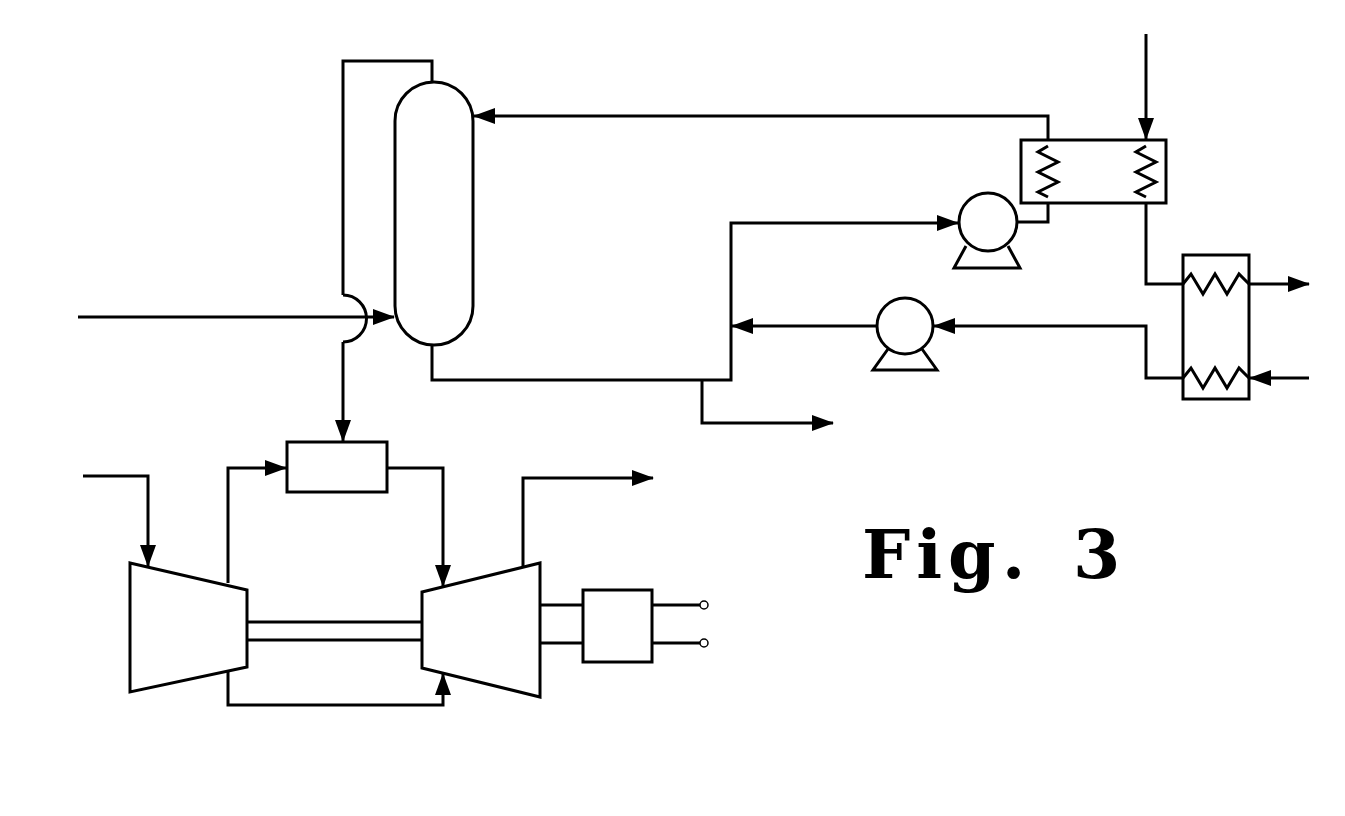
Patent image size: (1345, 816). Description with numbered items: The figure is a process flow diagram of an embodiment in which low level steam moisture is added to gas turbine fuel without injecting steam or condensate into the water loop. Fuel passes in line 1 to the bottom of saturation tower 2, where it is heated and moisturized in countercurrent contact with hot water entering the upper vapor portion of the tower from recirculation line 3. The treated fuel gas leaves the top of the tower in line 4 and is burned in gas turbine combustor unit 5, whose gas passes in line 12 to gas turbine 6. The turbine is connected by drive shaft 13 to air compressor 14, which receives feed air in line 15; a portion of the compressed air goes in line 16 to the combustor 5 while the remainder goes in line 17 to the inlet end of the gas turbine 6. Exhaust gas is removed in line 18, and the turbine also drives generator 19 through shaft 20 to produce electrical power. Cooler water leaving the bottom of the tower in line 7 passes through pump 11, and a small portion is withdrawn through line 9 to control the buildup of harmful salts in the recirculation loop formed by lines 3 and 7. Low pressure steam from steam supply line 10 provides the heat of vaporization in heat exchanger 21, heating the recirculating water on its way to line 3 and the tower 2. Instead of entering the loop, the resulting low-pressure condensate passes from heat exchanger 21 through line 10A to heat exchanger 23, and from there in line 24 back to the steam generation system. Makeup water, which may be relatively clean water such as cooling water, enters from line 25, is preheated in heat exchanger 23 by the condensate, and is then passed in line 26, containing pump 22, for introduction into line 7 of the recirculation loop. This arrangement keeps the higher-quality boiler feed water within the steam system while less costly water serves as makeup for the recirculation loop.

The fuel line 1 is at (232, 317).
The saturation tower 2 is at (473, 212).
The recirculation line 3 is at (682, 116).
The treated fuel gas line 4 is at (343, 182).
The gas turbine combustor unit 5 is at (350, 442).
The gas turbine 6 is at (490, 685).
The recirculation line 7 is at (490, 380).
The blowdown line 9 is at (740, 423).
The steam supply line 10 is at (1145, 97).
The condensate line 10A is at (1148, 220).
The pump 11 is at (1012, 240).
The combustion gas line 12 is at (435, 468).
The drive shaft 13 is at (368, 622).
The air compressor 14 is at (168, 682).
The feed air line 15 is at (120, 476).
The compressed air line 16 is at (229, 495).
The compressed air line 17 is at (356, 705).
The exhaust gas line 18 is at (548, 478).
The generator 19 is at (615, 590).
The shaft 20 is at (552, 605).
The heat exchanger 21 is at (1166, 172).
The pump 22 is at (928, 340).
The heat exchanger 23 is at (1222, 255).
The condensate return line 24 is at (1258, 284).
The makeup water line 25 is at (1300, 378).
The makeup water line 26 is at (775, 326).